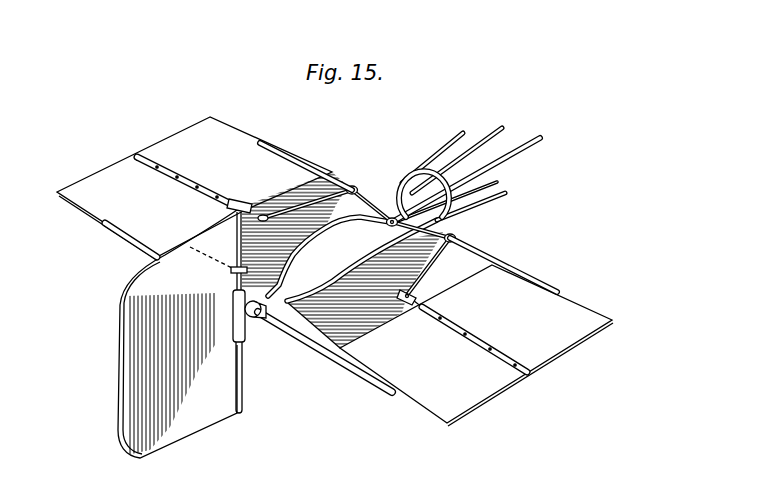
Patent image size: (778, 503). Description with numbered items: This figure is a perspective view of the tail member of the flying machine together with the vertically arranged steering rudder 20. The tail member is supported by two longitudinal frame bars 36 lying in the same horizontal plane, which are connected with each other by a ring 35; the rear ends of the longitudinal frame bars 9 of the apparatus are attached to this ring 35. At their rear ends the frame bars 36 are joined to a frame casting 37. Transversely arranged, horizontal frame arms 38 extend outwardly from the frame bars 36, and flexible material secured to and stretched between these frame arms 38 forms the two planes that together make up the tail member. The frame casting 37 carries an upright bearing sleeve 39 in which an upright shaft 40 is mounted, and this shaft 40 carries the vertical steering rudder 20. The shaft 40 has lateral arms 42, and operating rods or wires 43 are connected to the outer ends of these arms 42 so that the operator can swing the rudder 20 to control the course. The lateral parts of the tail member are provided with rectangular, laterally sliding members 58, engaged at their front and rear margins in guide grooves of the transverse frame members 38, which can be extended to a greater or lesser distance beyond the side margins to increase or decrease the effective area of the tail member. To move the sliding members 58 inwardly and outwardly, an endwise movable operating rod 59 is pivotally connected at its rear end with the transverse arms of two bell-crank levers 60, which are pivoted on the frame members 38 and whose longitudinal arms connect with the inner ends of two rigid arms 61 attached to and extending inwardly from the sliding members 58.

The longitudinal frame bars 9 is at (463, 133).
The vertical steering rudder 20 is at (121, 334).
The ring 35 is at (406, 175).
The longitudinal frame bars 36 is at (296, 252).
The frame casting 37 is at (251, 317).
The transverse frame arms 38 is at (118, 233).
The upright bearing sleeve 39 is at (243, 333).
The upright shaft 40 is at (243, 386).
The lateral arms 42 is at (197, 250).
The operating rods or wires 43 is at (336, 190).
The sliding members 58 is at (160, 143).
The operating rod 59 is at (540, 138).
The bell-crank levers 60 is at (352, 186).
The rigid arms 61 is at (257, 203).